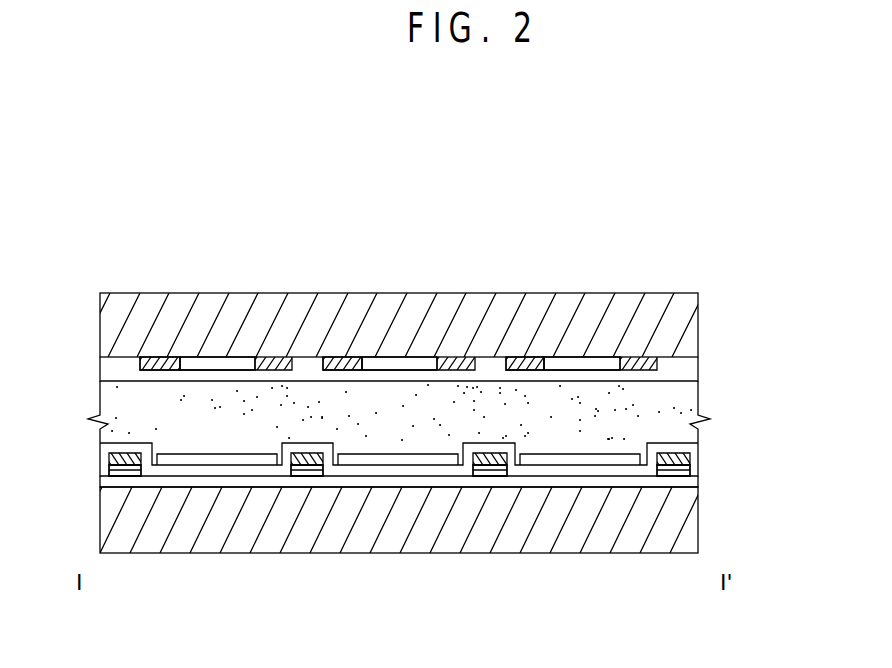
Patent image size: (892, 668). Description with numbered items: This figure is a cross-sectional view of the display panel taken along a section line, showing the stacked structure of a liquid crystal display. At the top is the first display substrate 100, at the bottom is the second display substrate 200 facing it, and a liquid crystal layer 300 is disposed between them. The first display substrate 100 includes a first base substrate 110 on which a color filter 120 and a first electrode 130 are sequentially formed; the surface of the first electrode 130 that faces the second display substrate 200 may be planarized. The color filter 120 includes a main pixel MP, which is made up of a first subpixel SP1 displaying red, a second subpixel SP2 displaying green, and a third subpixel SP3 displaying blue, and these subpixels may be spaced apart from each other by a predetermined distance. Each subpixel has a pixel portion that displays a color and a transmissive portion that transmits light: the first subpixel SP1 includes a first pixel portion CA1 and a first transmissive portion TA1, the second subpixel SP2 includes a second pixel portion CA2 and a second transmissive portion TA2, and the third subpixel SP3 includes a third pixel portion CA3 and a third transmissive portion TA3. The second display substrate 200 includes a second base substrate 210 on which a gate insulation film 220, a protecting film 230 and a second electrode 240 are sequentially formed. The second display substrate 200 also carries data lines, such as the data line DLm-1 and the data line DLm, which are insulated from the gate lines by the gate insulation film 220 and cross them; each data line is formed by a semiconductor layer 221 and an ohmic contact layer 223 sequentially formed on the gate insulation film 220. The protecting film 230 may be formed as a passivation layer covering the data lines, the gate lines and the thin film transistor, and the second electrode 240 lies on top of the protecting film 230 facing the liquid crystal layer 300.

The first display substrate 100 is at (440, 337).
The first base substrate 110 is at (698, 316).
The color filter 120 is at (660, 363).
The first electrode 130 is at (698, 373).
The liquid crystal layer 300 is at (100, 397).
The second display substrate 200 is at (436, 487).
The second base substrate 210 is at (407, 522).
The gate insulation film 220 is at (699, 486).
The semiconductor layer 221 is at (695, 478).
The ohmic contact layer 223 is at (692, 470).
The protecting film 230 is at (702, 457).
The second electrode 240 is at (620, 464).
The main pixel MP is at (375, 268).
The first subpixel SP1 is at (192, 284).
The second subpixel SP2 is at (375, 284).
The third subpixel SP3 is at (558, 284).
The first pixel portion CA1 is at (155, 362).
The first transmissive portion TA1 is at (197, 362).
The second pixel portion CA2 is at (338, 362).
The second transmissive portion TA2 is at (382, 362).
The third pixel portion CA3 is at (523, 362).
The third transmissive portion TA3 is at (563, 362).
The data line DLm-1 is at (124, 470).
The data line DLm is at (303, 470).